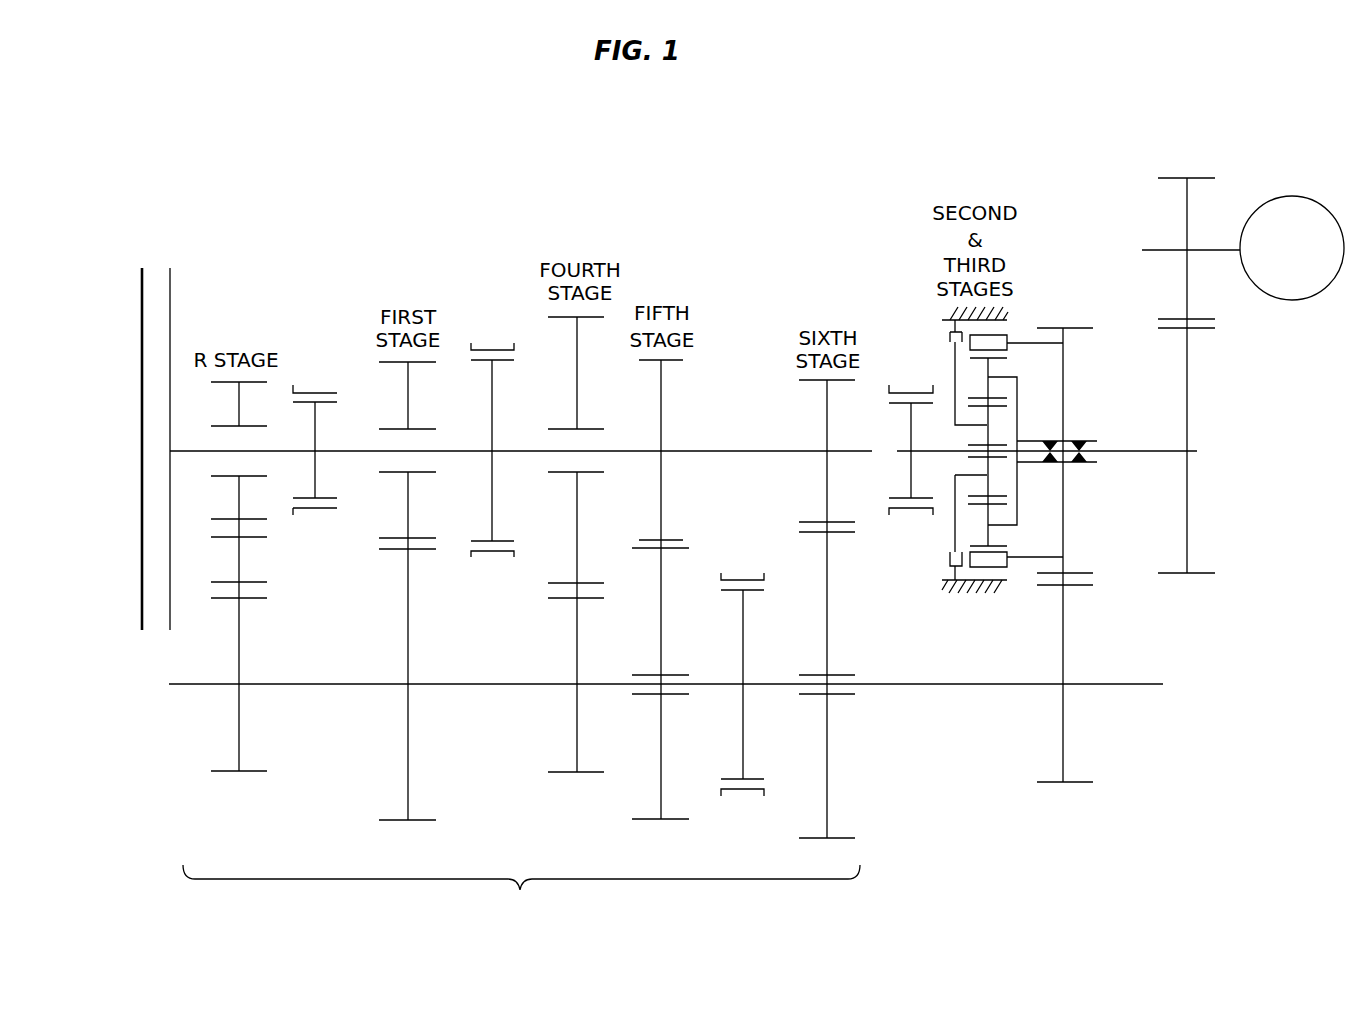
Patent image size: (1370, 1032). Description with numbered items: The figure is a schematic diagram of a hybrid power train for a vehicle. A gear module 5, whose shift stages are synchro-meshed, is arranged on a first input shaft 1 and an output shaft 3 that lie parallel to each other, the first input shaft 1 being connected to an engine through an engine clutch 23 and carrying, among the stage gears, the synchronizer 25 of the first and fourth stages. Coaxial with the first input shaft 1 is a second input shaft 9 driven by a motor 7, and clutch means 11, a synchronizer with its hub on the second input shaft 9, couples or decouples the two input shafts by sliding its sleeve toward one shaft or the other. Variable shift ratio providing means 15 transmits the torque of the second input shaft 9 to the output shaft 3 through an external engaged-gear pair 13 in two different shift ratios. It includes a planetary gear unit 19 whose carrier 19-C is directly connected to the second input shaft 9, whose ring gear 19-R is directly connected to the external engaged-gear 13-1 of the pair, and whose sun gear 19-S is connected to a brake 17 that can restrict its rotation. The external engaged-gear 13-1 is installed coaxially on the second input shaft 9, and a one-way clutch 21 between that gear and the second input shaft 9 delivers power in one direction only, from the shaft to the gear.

The first input shaft 1 is at (735, 451).
The output shaft 3 is at (195, 684).
The gear module 5 is at (521, 893).
The motor 7 is at (1290, 196).
The second input shaft 9 is at (1197, 452).
The clutch means 11 is at (907, 380).
The external engaged-gear pair 13 is at (1102, 583).
The external engaged-gear 13-1 is at (1075, 326).
The variable shift ratio providing means 15 is at (1066, 328).
The brake 17 is at (948, 338).
The planetary gear unit 19 is at (1066, 451).
The ring gear 19-R is at (1003, 343).
The carrier 19-C is at (1012, 377).
The sun gear 19-S is at (1003, 406).
The one-way clutch 21 is at (1102, 463).
The engine clutch 23 is at (154, 260).
The synchronizer 25 is at (488, 338).